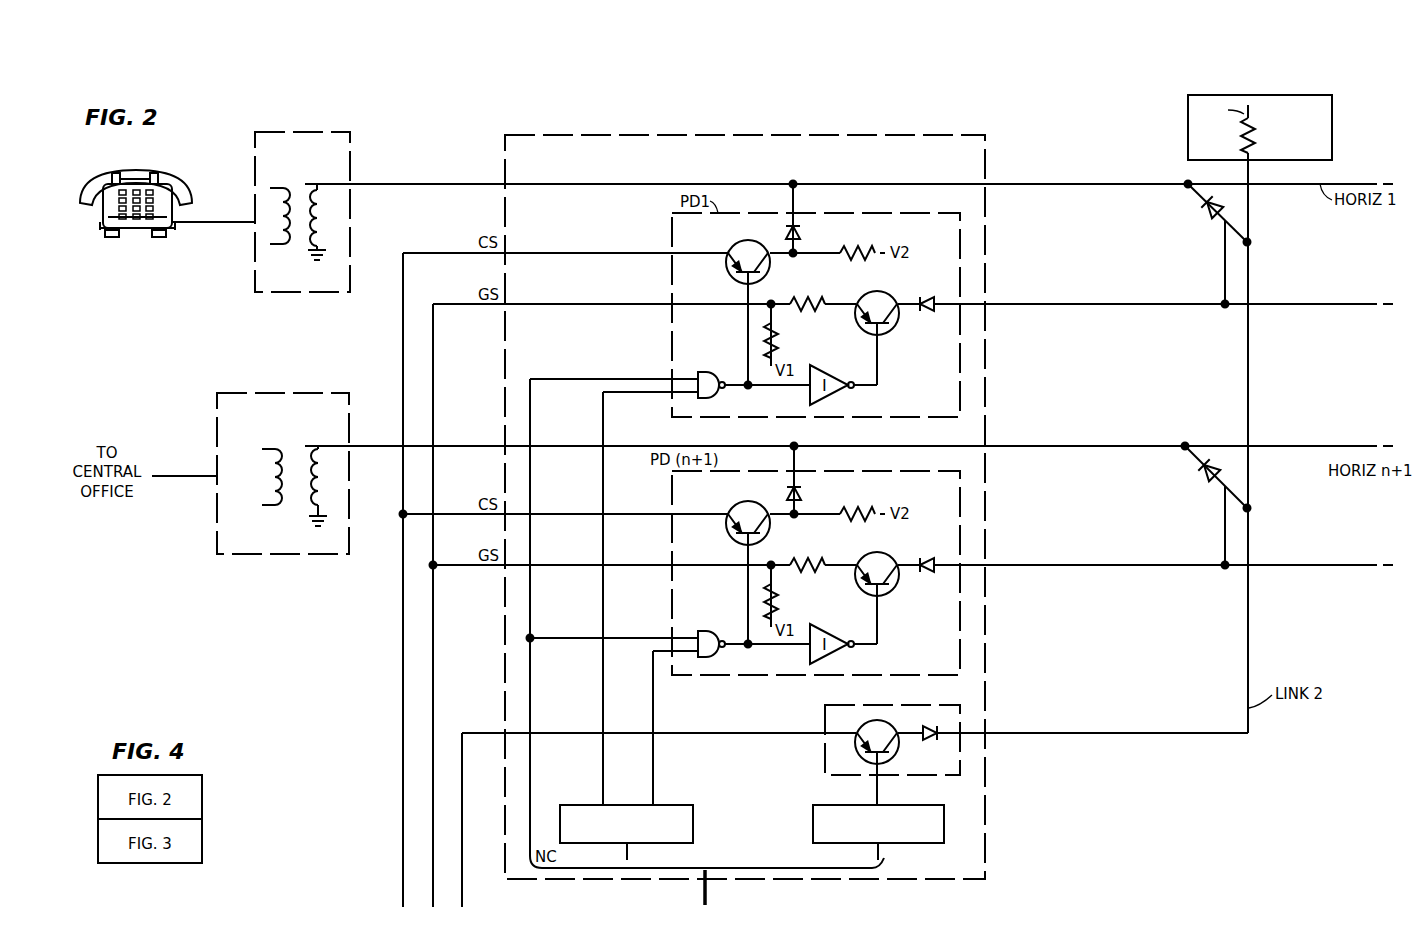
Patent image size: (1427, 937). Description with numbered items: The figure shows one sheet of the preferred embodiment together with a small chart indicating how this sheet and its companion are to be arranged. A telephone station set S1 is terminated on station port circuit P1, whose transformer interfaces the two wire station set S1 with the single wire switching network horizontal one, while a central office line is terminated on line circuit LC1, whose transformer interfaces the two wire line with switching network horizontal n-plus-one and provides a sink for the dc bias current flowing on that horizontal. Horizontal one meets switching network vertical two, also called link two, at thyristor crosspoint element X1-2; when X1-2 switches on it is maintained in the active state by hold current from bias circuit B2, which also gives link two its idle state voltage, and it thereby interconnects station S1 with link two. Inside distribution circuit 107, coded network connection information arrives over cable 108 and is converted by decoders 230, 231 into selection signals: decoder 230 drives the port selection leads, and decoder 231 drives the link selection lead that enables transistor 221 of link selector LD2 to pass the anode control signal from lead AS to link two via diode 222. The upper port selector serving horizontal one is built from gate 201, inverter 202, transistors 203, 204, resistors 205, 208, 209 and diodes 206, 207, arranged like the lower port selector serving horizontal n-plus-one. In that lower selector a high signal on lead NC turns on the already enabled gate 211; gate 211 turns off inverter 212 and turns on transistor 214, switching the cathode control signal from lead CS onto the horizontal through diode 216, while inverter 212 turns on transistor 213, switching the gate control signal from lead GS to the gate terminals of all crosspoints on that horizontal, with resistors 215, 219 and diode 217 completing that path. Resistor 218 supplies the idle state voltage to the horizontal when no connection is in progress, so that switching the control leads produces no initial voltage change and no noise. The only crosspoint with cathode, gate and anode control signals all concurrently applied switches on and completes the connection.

The distribution circuit 107 is at (942, 135).
The cable 108 is at (707, 890).
The NAND gate 201 is at (708, 372).
The inverter 202 is at (838, 399).
The transistor 203 is at (894, 332).
The transistor 204 is at (728, 252).
The resistor 205 is at (804, 282).
The diode 206 is at (785, 233).
The diode 207 is at (928, 296).
The resistor 208 is at (858, 243).
The resistor 209 is at (778, 340).
The gate 211 is at (708, 631).
The inverter 212 is at (838, 658).
The transistor 213 is at (894, 593).
The transistor 214 is at (728, 513).
The resistor 215 is at (800, 556).
The diode 216 is at (786, 494).
The diode 217 is at (927, 573).
The resistor 218 is at (858, 504).
The resistor 219 is at (778, 600).
The transistor 221 is at (857, 731).
The diode 222 is at (930, 741).
The decoder 230 is at (693, 838).
The decoder 231 is at (928, 843).
The telephone station set S1 is at (172, 172).
The station port circuit P1 is at (325, 132).
The line circuit LC1 is at (317, 393).
The bias circuit B2 is at (1332, 128).
The link selector LD2 is at (912, 705).
The thyristor crosspoint element X1-2 is at (1205, 216).